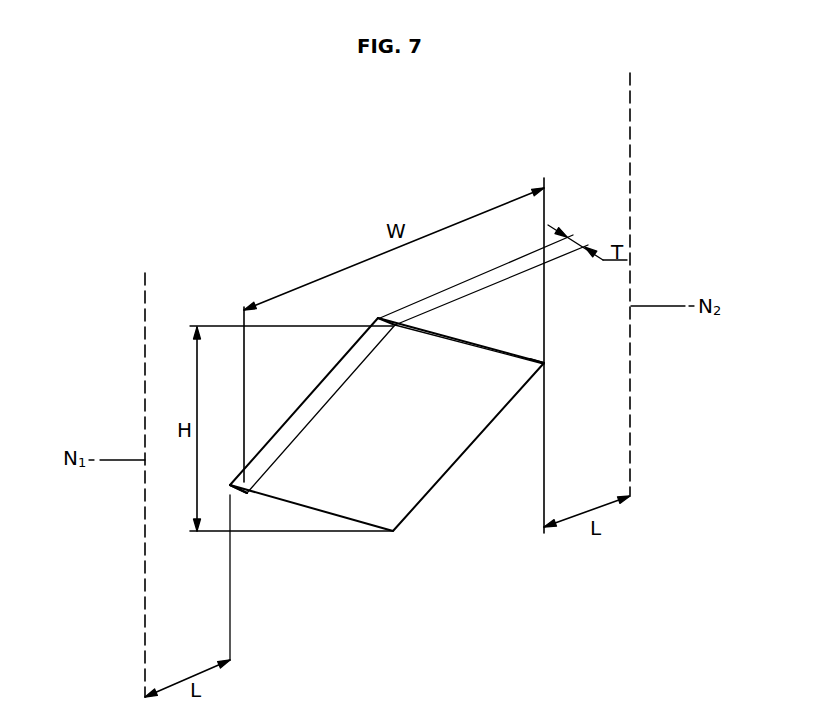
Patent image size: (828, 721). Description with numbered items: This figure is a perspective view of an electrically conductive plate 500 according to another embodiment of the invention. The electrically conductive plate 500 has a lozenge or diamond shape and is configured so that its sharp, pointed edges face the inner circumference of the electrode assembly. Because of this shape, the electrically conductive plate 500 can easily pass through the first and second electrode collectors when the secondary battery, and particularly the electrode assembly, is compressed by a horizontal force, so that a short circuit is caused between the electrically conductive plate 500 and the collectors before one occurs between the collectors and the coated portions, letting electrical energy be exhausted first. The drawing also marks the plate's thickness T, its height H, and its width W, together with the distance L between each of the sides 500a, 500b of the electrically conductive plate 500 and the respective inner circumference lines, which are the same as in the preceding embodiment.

The electrically conductive plate 500 is at (417, 495).
The side of the electrically conductive plate 500a is at (250, 490).
The side of the electrically conductive plate 500b is at (546, 366).